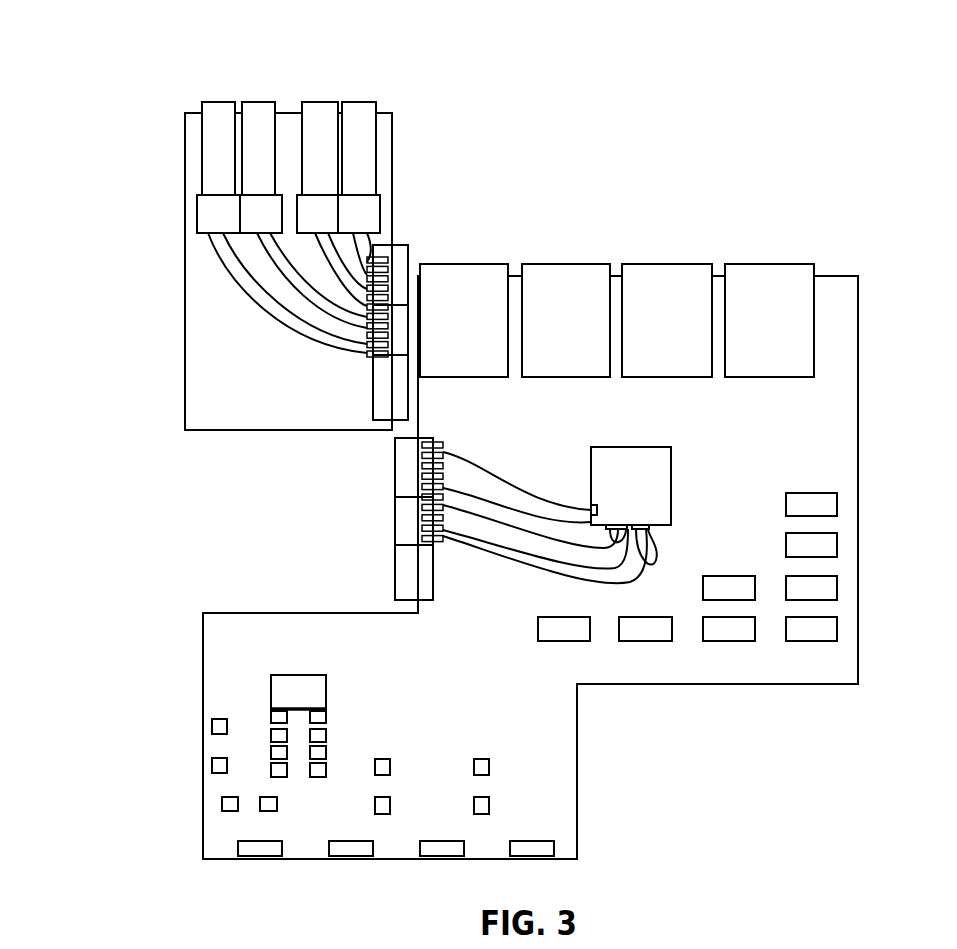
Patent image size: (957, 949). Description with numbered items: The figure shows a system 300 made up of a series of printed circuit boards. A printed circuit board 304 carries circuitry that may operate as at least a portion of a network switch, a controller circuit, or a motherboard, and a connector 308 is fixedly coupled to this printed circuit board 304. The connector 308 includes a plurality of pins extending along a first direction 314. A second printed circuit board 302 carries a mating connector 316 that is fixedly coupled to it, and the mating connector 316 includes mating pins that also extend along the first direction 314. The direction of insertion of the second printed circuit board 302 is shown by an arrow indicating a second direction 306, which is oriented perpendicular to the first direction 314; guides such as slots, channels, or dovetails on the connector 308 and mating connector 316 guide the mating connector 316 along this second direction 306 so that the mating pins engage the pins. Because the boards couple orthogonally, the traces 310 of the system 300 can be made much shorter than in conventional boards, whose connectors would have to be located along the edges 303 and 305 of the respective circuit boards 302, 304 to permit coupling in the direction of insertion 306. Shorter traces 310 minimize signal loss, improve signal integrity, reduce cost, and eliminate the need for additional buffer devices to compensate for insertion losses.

The system 300 is at (112, 70).
The second printed circuit board 302 is at (185, 399).
The edge 303 is at (232, 447).
The printed circuit board 304 is at (203, 650).
The edge 305 is at (243, 600).
The second direction 306 is at (351, 475).
The connector 308 is at (396, 454).
The traces 310 is at (235, 292).
The first direction 314 is at (278, 523).
The mating connector 316 is at (406, 244).